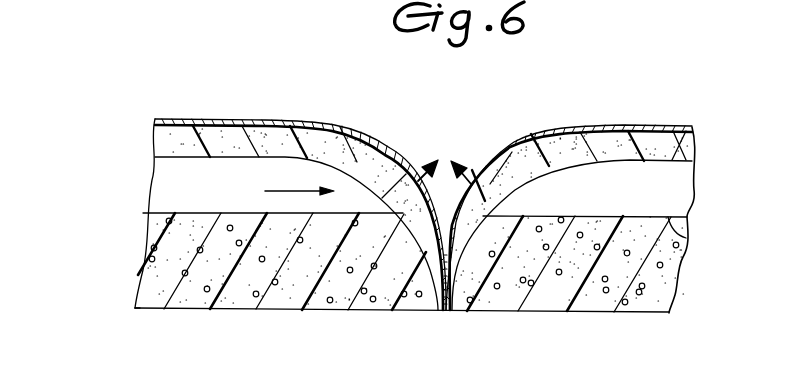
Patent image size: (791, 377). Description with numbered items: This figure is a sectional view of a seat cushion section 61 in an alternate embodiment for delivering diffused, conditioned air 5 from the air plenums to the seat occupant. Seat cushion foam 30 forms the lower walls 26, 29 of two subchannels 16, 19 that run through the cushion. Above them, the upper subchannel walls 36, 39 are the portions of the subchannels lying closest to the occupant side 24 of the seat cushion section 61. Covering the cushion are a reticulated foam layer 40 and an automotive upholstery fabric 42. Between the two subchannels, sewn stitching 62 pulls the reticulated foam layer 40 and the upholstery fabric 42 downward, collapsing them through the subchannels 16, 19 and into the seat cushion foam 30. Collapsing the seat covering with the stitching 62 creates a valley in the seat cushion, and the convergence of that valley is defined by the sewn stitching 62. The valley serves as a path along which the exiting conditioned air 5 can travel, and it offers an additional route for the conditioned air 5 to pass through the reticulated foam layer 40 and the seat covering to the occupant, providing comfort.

The conditioned air 5 is at (277, 190).
The subchannel 16 is at (197, 174).
The subchannel 19 is at (607, 177).
The occupant side 24 is at (297, 120).
The lower wall 26 is at (192, 214).
The lower wall 29 is at (687, 238).
The seat cushion foam 30 is at (265, 311).
The upper subchannel wall 36 is at (180, 119).
The upper subchannel wall 39 is at (690, 126).
The reticulated foam layer 40 is at (340, 128).
The automotive upholstery fabric 42 is at (395, 160).
The seat cushion section 61 is at (108, 288).
The sewn stitching 62 is at (445, 311).